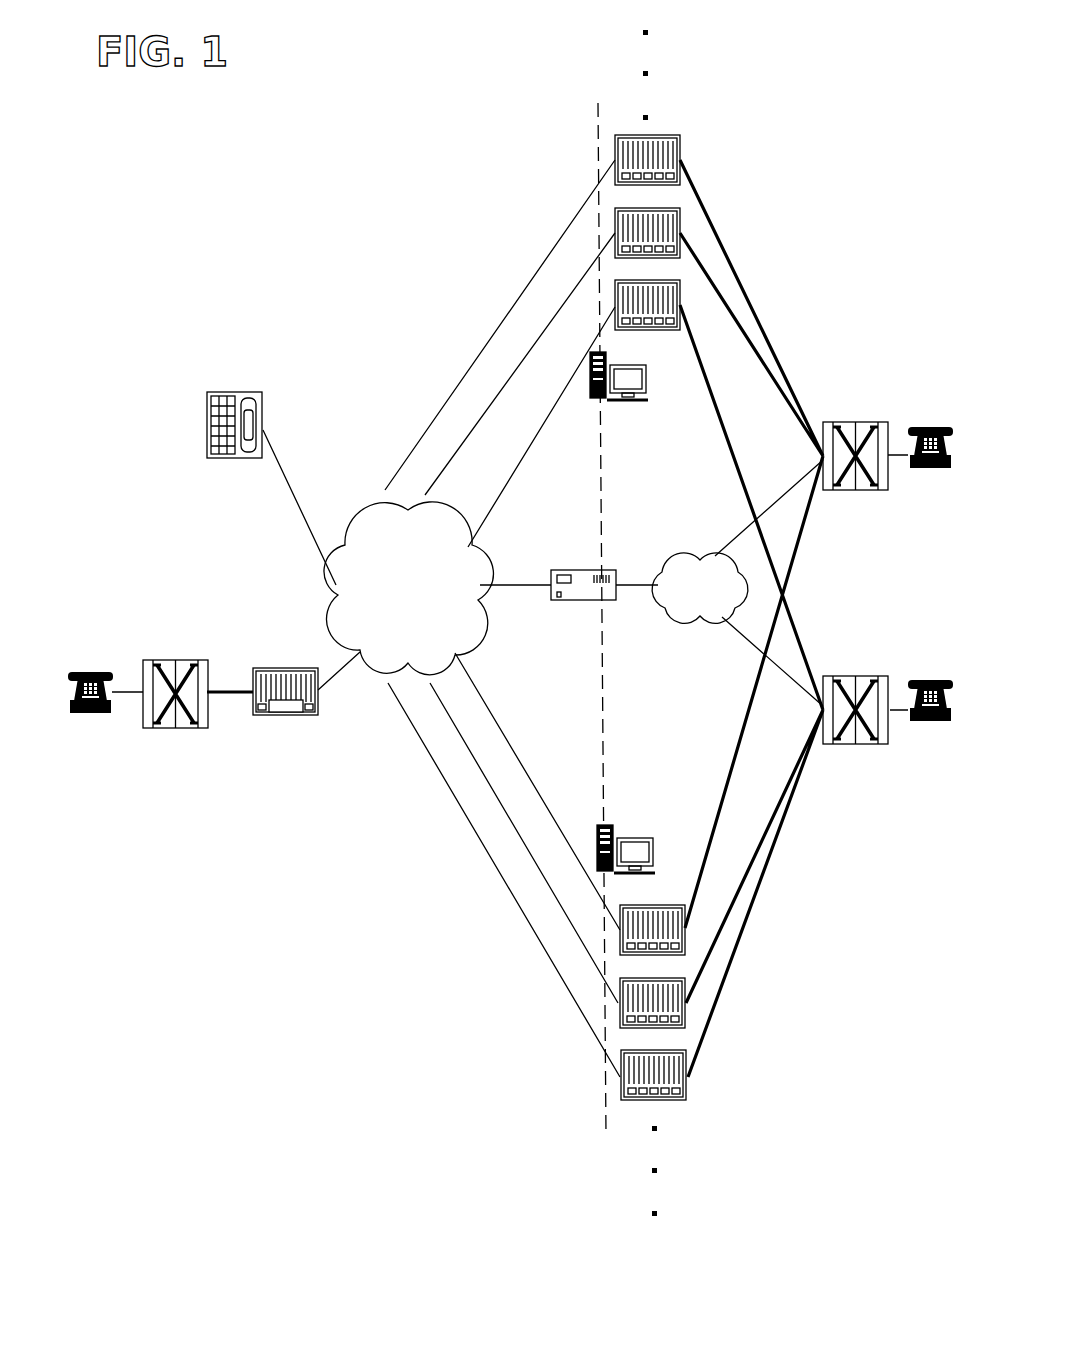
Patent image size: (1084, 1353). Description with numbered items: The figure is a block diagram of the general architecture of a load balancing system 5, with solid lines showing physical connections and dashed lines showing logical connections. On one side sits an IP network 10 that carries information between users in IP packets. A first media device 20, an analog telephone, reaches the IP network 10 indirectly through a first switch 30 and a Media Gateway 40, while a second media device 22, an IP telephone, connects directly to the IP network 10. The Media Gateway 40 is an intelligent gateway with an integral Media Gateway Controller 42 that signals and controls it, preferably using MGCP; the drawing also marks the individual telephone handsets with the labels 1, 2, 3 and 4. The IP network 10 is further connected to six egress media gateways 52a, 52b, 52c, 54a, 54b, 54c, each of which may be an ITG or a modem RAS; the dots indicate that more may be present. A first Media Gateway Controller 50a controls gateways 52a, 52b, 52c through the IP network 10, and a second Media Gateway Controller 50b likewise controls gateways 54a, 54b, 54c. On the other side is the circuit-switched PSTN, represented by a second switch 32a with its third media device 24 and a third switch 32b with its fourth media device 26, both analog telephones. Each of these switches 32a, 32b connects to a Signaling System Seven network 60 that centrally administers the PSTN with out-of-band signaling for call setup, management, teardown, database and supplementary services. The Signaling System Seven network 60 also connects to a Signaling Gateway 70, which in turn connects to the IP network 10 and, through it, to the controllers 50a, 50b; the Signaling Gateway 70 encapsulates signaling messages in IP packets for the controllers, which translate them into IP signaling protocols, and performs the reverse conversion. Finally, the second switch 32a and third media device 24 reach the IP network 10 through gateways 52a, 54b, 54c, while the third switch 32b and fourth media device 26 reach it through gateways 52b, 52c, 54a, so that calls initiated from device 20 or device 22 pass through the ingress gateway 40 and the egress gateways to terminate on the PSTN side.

The load balancing system 5 is at (851, 112).
The IP network 10 is at (375, 488).
The telephone 1 is at (90, 712).
The IP phone 2 is at (233, 452).
The telephone 3 is at (930, 722).
The telephone 4 is at (930, 468).
The first media device 20 is at (117, 727).
The second media device 22 is at (211, 423).
The third media device 24 is at (909, 693).
The fourth media device 26 is at (909, 438).
The first switch 30 is at (177, 660).
The second switch 32a is at (885, 745).
The third switch 32b is at (885, 490).
The media gateway 40 is at (294, 695).
The media gateway controller 42 is at (312, 712).
The first media gateway controller 50a is at (650, 378).
The second media gateway controller 50b is at (634, 840).
The media gateway 52a is at (617, 288).
The media gateway 52b is at (617, 210).
The media gateway 52c is at (625, 135).
The media gateway 54a is at (620, 940).
The media gateway 54b is at (620, 1013).
The media gateway 54c is at (620, 1085).
The SS7 network 60 is at (693, 555).
The signaling gateway 70 is at (578, 572).